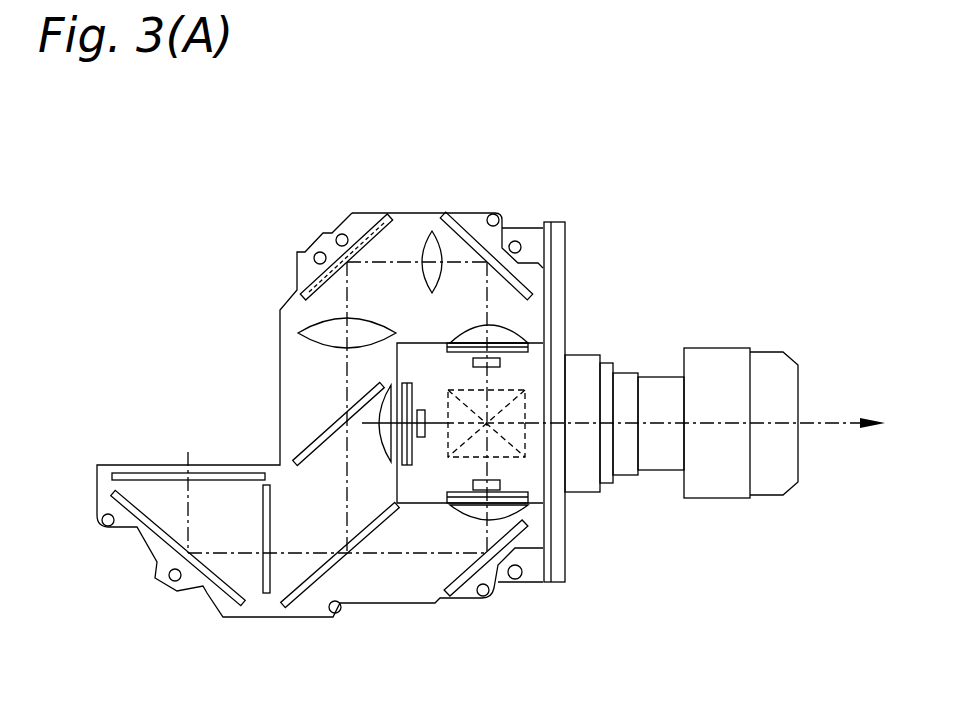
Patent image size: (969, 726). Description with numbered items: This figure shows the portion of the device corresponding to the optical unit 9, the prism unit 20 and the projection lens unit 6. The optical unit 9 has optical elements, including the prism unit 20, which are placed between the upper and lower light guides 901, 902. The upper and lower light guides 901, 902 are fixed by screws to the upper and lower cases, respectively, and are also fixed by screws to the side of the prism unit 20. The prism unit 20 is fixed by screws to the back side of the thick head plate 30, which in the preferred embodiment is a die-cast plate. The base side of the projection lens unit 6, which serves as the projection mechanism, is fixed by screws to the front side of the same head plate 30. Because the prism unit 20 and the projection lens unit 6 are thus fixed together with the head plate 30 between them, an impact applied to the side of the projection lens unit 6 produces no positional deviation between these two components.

The optical unit 9 is at (413, 163).
The upper light guide 901 is at (320, 415).
The lower light guide 902 is at (230, 372).
The prism unit 20 is at (535, 365).
The head plate 30 is at (557, 517).
The projection lens unit 6 is at (772, 318).